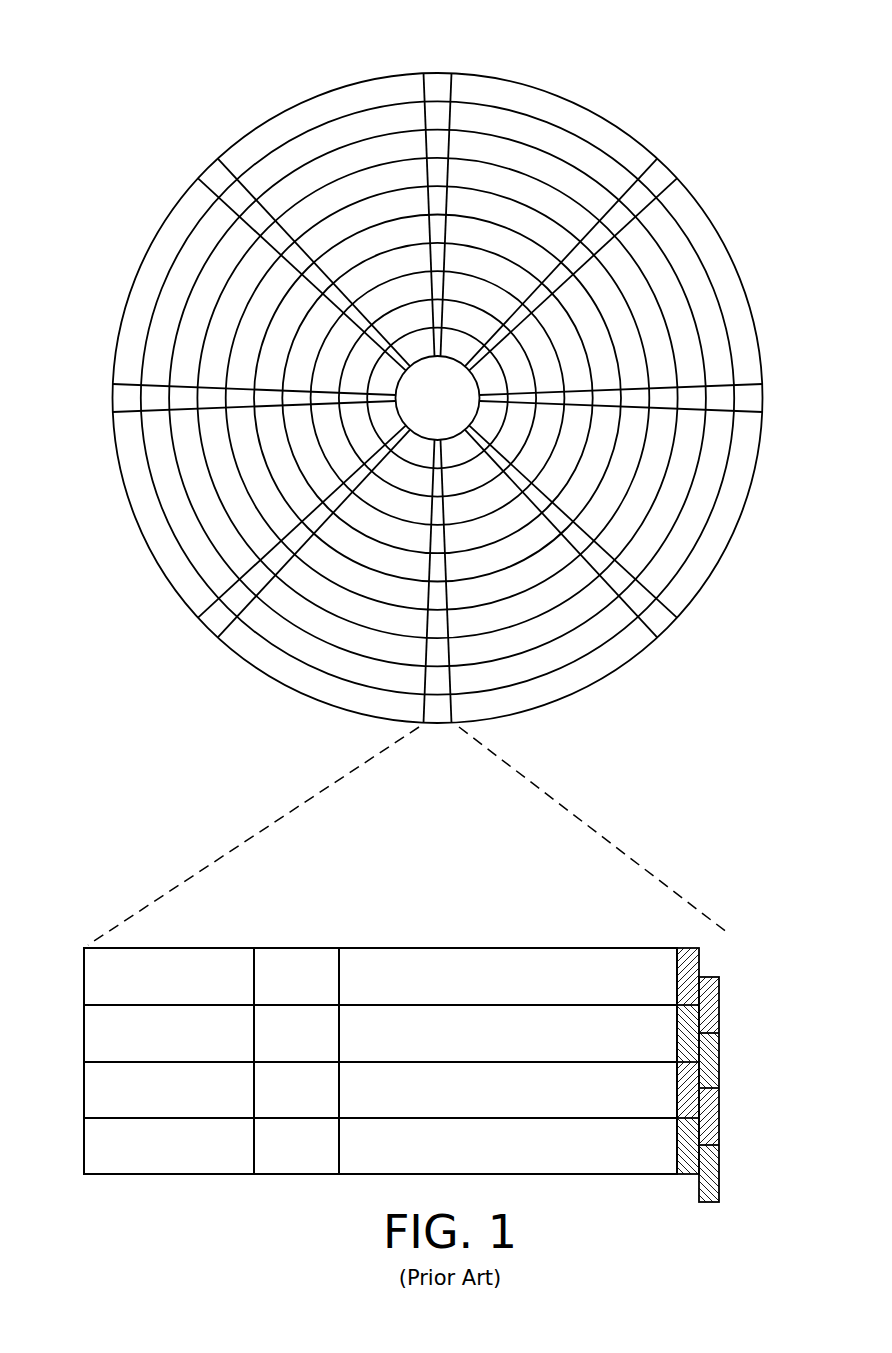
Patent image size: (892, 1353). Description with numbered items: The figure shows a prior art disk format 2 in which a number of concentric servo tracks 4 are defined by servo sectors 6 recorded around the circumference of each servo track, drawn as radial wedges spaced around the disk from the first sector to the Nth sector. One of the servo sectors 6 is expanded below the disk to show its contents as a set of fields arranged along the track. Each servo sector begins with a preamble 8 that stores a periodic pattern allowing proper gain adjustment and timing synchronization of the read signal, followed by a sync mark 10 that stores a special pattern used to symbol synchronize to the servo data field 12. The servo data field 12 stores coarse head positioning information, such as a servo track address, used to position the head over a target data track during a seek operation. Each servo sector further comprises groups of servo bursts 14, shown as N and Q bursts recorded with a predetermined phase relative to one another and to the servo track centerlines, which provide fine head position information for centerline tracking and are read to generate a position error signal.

The disk format 2 is at (200, 80).
The servo track 4 is at (548, 140).
The servo sector 6 is at (437, 410).
The preamble 8 is at (176, 948).
The sync mark 10 is at (297, 948).
The servo data field 12 is at (495, 948).
The servo bursts 14 is at (714, 948).